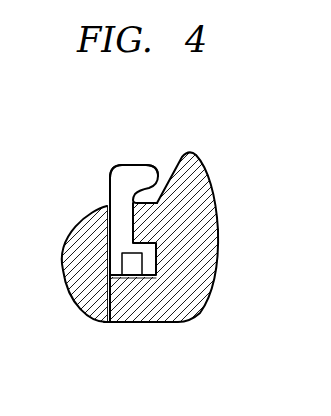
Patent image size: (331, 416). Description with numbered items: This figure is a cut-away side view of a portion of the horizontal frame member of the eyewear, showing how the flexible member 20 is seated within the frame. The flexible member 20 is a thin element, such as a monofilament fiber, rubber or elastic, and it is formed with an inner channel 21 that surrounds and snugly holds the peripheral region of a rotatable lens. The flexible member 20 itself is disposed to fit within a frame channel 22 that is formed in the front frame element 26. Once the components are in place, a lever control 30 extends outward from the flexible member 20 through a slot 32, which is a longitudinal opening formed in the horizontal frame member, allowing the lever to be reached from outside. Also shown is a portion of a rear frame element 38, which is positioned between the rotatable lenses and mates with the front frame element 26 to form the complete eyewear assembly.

The flexible member 20 is at (113, 190).
The lever control 30 is at (140, 166).
The frame element 26 is at (187, 292).
The rear frame element 38 is at (78, 288).
The slot 32 is at (103, 204).
The frame channel 22 is at (138, 258).
The inner channel 21 is at (131, 256).